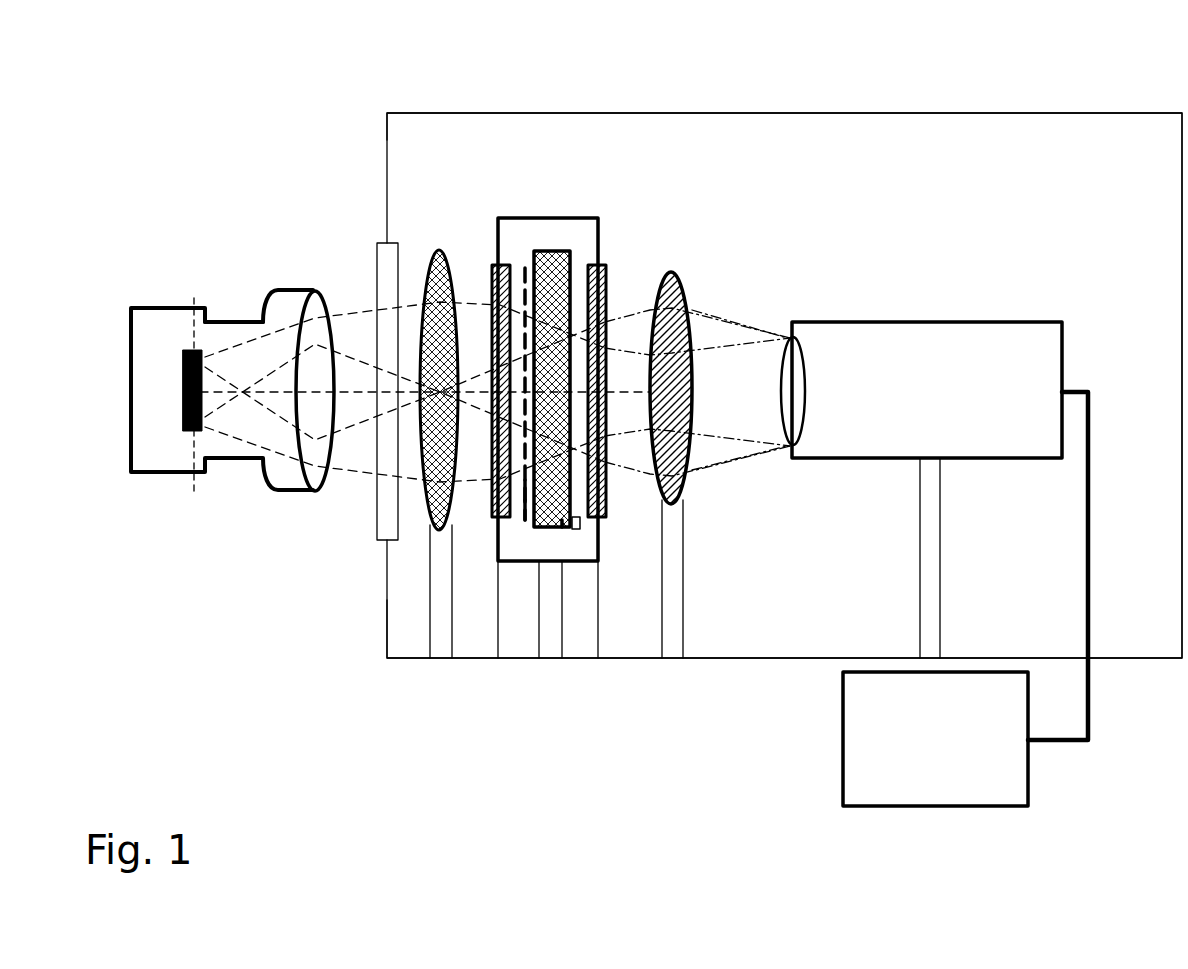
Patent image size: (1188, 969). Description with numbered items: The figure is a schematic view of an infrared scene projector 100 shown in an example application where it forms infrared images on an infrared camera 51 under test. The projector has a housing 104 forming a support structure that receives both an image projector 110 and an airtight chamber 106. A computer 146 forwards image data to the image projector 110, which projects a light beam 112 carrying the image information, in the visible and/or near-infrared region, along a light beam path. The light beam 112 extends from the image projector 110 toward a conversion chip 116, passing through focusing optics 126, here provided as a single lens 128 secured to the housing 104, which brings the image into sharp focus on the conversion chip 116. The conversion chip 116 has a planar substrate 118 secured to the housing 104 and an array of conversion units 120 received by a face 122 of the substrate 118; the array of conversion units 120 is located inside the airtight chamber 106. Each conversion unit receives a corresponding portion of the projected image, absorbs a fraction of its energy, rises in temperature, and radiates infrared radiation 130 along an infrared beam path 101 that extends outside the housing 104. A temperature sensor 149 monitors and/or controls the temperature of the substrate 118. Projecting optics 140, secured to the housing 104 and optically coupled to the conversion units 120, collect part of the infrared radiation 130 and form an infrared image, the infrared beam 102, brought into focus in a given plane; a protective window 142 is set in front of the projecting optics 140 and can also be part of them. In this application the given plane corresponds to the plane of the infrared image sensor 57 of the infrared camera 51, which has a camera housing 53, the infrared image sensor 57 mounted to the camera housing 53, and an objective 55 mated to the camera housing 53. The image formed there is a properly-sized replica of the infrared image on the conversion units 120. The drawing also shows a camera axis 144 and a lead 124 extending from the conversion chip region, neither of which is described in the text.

The infrared scene projector 100 is at (316, 125).
The housing 104 is at (855, 113).
The infrared camera 51 is at (203, 543).
The camera housing 53 is at (247, 321).
The objective 55 is at (313, 289).
The infrared image sensor 57 is at (183, 393).
The light source axis 144 is at (196, 298).
The infrared beam path 101 is at (353, 397).
The infrared beam 102 is at (347, 330).
The protective window 142 is at (373, 257).
The projecting optics 140 is at (438, 248).
The infrared radiation 130 is at (491, 310).
The airtight chamber 106 is at (598, 217).
The array of conversion units 120 is at (527, 266).
The conversion chip 116 is at (553, 243).
The substrate 118 is at (581, 528).
The face 122 is at (527, 517).
The electrode lead 124 is at (528, 522).
The temperature sensor 149 is at (565, 507).
The single lens 128 is at (688, 293).
The focusing optics 126 is at (674, 260).
The light beam 112 is at (748, 333).
The image projector 110 is at (917, 322).
The computer 146 is at (847, 738).